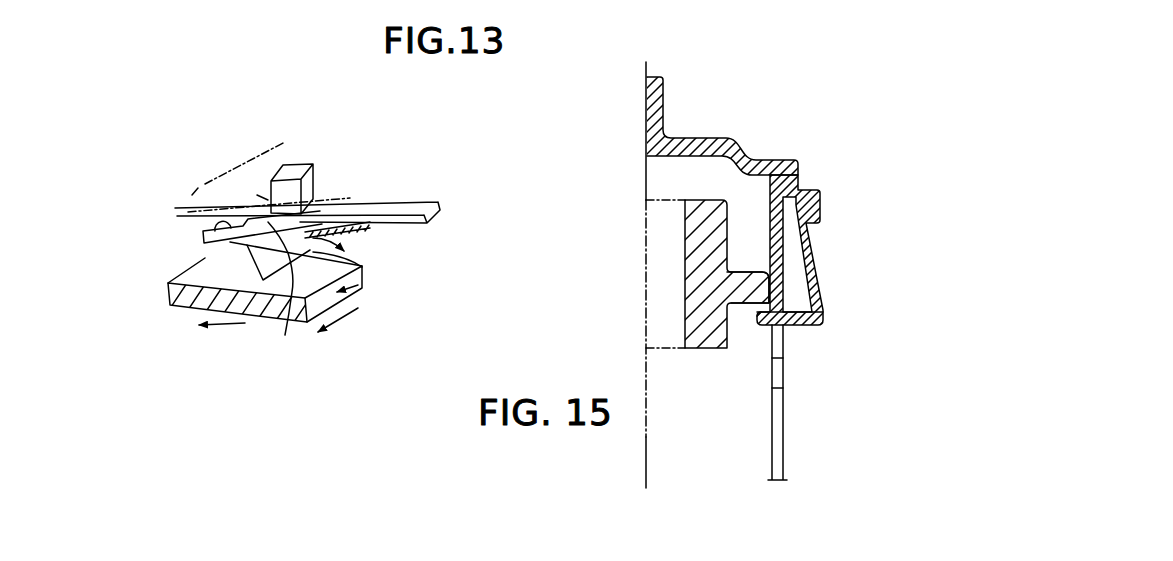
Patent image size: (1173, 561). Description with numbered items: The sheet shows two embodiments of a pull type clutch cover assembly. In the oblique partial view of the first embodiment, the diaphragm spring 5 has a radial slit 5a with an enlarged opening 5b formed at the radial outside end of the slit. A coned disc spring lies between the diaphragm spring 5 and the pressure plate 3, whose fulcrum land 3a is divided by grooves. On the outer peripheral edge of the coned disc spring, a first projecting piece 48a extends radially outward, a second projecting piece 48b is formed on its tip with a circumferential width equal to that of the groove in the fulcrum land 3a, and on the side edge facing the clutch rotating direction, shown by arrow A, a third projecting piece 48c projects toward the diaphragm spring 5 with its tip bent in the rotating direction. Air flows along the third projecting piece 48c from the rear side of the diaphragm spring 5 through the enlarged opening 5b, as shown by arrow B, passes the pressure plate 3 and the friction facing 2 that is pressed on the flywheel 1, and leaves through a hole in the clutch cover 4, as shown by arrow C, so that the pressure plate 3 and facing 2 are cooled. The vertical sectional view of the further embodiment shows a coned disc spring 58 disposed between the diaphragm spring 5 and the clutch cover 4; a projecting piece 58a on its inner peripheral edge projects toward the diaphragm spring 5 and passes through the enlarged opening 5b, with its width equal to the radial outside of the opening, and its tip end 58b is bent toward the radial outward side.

In FIG. 15, the flywheel 1 is at (630, 437).
In FIG. 15, the friction facing 2 is at (655, 333).
In FIG. 15, the pressure plate 3 is at (704, 352).
In FIG. 13, the fulcrum land 3a is at (198, 258).
In FIG. 15, the fulcrum land 3a is at (748, 290).
In FIG. 15, the clutch cover 4 is at (721, 138).
In FIG. 13, the diaphragm spring 5 is at (197, 188).
In FIG. 15, the diaphragm spring 5 is at (784, 417).
In FIG. 13, the radial slit 5a is at (387, 198).
In FIG. 15, the radial slit 5a is at (780, 389).
In FIG. 13, the enlarged opening 5b is at (322, 186).
In FIG. 15, the enlarged opening 5b is at (780, 346).
In FIG. 13, the first projecting piece 48a is at (278, 291).
In FIG. 13, the second projecting piece 48b is at (203, 234).
In FIG. 13, the third projecting piece 48c is at (290, 168).
In FIG. 15, the coned disc spring 58 is at (826, 284).
In FIG. 15, the projecting piece 58a is at (800, 327).
In FIG. 15, the tip end 58b is at (760, 316).
In FIG. 13, the clutch rotating direction A is at (160, 182).
In FIG. 13, the air flow through enlarged opening B is at (312, 183).
In FIG. 13, the air outflow direction C is at (365, 288).